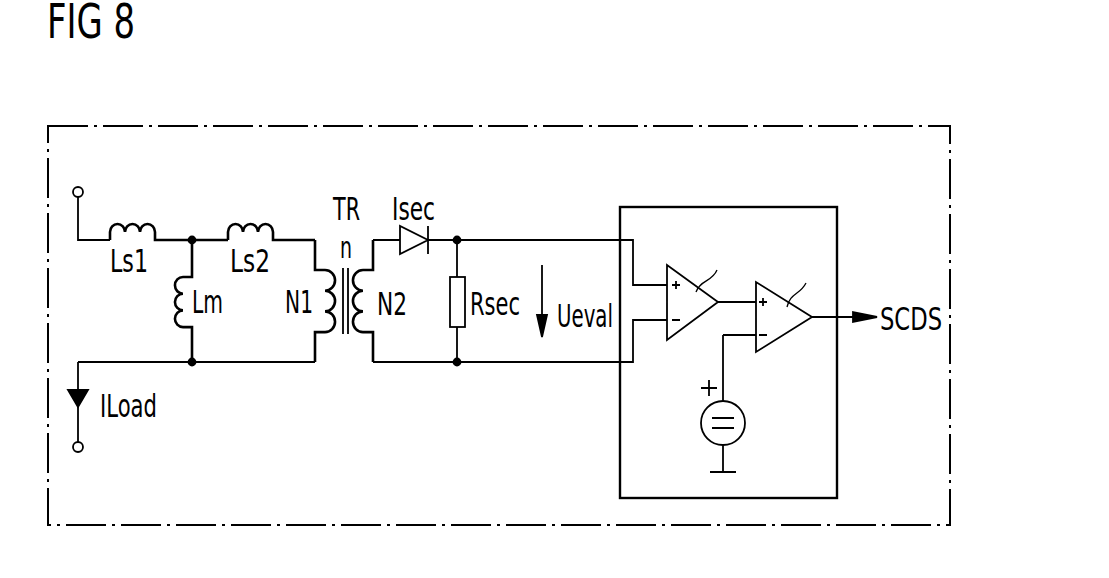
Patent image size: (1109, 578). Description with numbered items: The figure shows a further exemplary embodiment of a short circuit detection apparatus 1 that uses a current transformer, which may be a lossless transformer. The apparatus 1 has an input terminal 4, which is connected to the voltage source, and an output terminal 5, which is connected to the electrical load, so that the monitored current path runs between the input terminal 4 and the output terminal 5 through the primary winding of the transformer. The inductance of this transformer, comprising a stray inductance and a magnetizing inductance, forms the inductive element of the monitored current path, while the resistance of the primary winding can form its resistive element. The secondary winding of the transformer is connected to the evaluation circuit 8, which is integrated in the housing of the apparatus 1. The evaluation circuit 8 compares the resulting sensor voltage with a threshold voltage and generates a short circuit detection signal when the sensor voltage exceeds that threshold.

The short circuit detection apparatus 1 is at (507, 126).
The input terminal 4 is at (84, 191).
The output terminal 5 is at (84, 447).
The evaluation circuit 8 is at (727, 207).